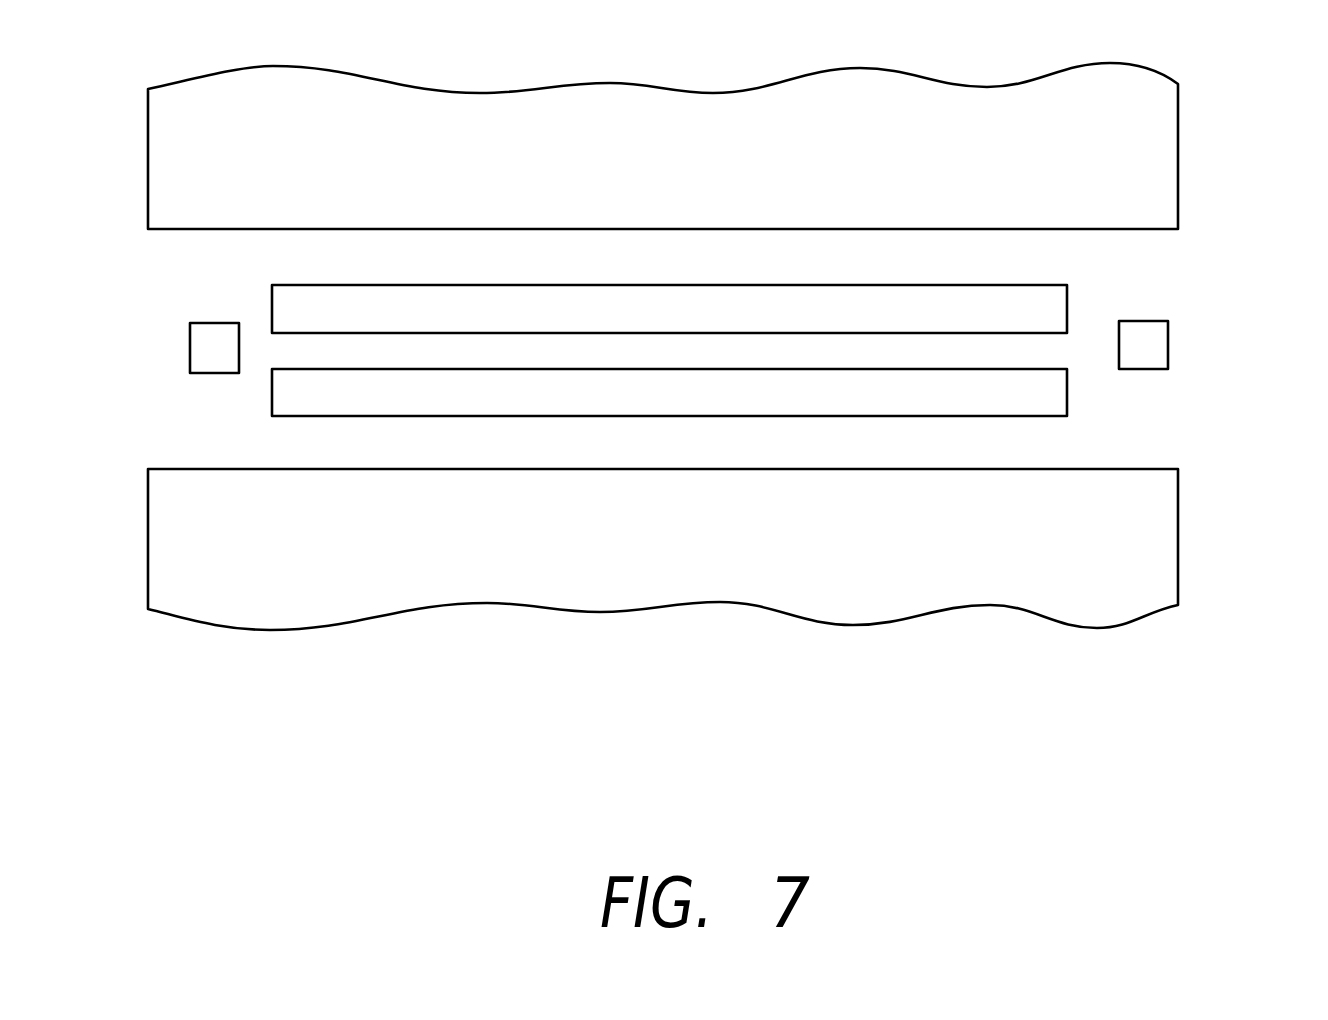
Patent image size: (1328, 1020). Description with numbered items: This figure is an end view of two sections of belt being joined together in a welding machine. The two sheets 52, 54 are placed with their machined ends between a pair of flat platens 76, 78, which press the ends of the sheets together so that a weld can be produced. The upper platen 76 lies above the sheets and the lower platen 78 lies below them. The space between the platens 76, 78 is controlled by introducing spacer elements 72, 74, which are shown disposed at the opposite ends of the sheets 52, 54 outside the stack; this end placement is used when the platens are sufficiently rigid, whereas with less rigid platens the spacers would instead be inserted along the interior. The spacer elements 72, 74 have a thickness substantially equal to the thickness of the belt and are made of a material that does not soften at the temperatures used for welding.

The flat platen 76 is at (1180, 84).
The flat platen 78 is at (165, 613).
The sheet 54 is at (1068, 292).
The sheet 52 is at (1068, 398).
The spacer element 72 is at (190, 373).
The spacer element 74 is at (1169, 348).